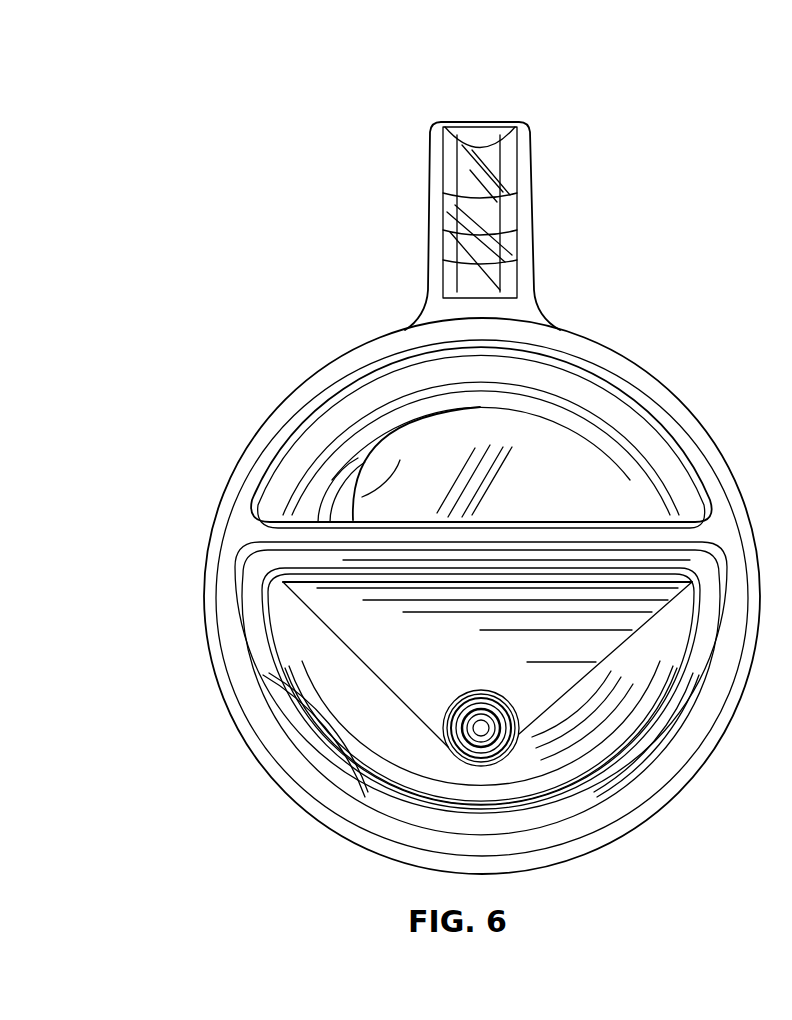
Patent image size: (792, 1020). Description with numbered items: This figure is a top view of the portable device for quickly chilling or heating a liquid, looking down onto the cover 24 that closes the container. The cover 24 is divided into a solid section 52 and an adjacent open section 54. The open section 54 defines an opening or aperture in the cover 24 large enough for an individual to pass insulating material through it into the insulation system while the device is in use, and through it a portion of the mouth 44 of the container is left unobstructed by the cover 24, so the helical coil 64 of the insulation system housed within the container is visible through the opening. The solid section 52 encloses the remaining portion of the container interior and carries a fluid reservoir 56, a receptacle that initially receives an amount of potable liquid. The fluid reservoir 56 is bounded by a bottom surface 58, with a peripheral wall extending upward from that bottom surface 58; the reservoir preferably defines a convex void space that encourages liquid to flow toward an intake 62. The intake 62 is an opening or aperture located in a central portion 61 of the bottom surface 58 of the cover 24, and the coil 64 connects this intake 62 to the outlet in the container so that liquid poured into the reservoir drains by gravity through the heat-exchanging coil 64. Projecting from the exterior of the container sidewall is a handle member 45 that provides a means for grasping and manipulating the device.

The cover 24 is at (238, 507).
The mouth 44 is at (575, 478).
The handle member 45 is at (480, 120).
The solid section 52 is at (318, 627).
The open section 54 is at (548, 427).
The fluid reservoir 56 is at (613, 673).
The bottom surface 58 is at (430, 700).
The central portion 61 is at (518, 775).
The intake 62 is at (482, 712).
The coil 64 is at (360, 497).